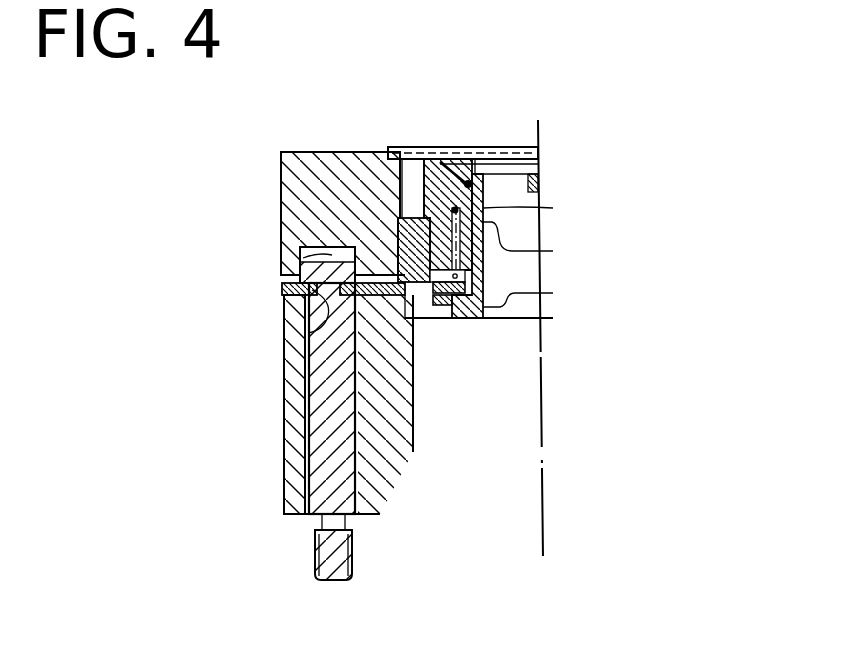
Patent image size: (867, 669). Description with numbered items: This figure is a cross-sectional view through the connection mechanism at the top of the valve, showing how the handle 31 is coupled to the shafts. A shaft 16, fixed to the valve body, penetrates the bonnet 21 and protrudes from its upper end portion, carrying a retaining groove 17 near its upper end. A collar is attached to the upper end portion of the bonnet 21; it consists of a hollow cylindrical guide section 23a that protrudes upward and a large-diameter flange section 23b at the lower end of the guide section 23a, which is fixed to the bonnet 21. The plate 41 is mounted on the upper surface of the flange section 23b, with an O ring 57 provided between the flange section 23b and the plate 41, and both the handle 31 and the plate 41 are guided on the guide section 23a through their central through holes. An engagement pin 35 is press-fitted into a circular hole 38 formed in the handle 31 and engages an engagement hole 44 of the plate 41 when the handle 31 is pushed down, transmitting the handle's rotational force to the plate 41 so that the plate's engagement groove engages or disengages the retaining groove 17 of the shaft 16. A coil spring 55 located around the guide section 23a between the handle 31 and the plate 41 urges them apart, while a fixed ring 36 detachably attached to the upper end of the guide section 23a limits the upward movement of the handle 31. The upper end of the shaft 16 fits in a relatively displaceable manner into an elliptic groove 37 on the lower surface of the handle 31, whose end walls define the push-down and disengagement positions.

The shaft 16 is at (328, 457).
The retaining groove 17 is at (308, 333).
The bonnet 21 is at (293, 413).
The guide section 23a is at (480, 222).
The large-diameter flange section 23b is at (483, 307).
The handle 31 is at (343, 180).
The engagement pin 35 is at (417, 147).
The fixed ring 36 is at (467, 180).
The elliptic groove 37 is at (298, 249).
The circular hole 38 is at (398, 215).
The plate 41 is at (287, 290).
The engagement hole 44 is at (430, 308).
The coil spring 55 is at (483, 210).
The O ring 57 is at (443, 296).